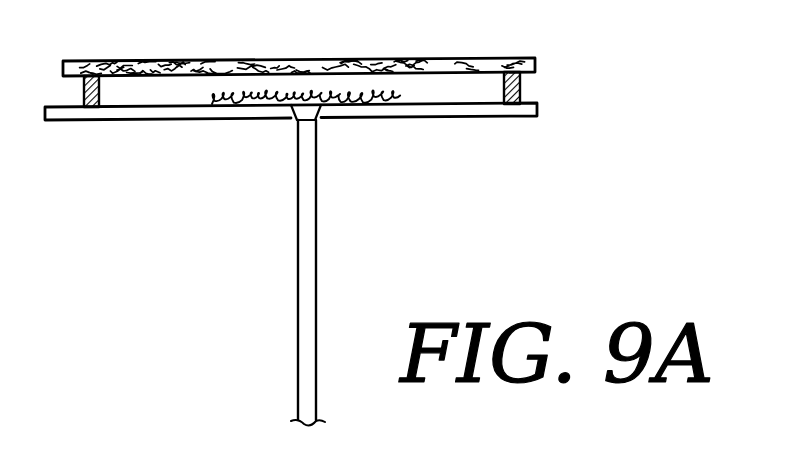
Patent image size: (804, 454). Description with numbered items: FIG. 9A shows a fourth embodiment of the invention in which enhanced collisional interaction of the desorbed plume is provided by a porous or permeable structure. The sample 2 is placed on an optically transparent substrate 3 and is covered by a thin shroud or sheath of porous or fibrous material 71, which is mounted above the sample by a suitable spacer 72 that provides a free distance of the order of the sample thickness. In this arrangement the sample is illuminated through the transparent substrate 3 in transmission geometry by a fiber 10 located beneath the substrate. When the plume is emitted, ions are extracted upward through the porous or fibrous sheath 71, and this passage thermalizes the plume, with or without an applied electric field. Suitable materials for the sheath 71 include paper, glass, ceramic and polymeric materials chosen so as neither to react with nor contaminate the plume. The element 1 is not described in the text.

The porous or fibrous sheath 71 is at (497, 57).
The spacer 72 is at (521, 89).
The substrate 3 is at (460, 117).
The sample 2 is at (244, 100).
The nozzle 1 is at (322, 111).
The fiber 10 is at (317, 273).